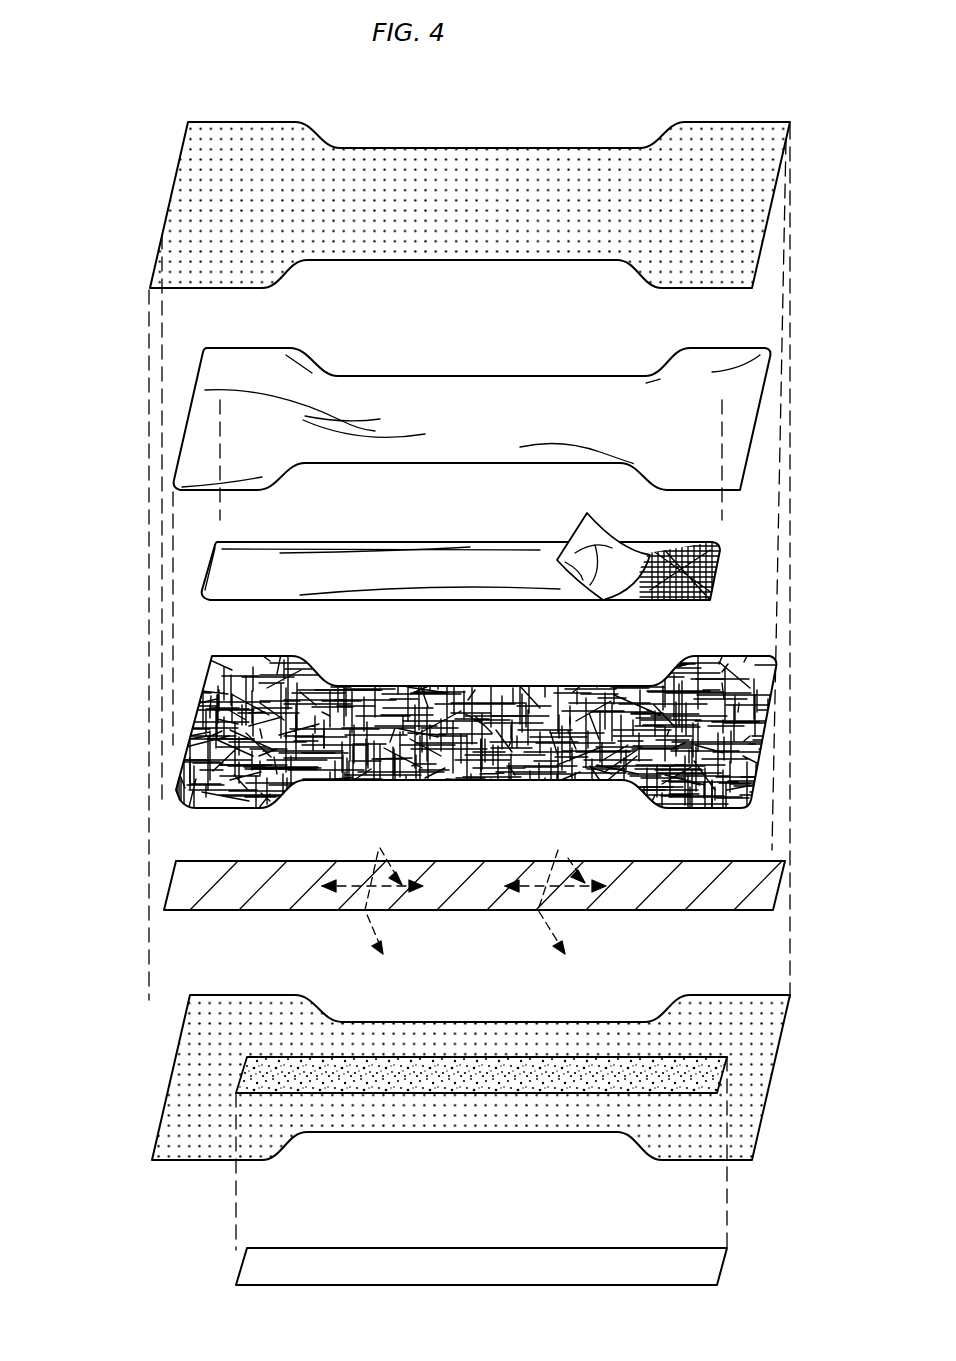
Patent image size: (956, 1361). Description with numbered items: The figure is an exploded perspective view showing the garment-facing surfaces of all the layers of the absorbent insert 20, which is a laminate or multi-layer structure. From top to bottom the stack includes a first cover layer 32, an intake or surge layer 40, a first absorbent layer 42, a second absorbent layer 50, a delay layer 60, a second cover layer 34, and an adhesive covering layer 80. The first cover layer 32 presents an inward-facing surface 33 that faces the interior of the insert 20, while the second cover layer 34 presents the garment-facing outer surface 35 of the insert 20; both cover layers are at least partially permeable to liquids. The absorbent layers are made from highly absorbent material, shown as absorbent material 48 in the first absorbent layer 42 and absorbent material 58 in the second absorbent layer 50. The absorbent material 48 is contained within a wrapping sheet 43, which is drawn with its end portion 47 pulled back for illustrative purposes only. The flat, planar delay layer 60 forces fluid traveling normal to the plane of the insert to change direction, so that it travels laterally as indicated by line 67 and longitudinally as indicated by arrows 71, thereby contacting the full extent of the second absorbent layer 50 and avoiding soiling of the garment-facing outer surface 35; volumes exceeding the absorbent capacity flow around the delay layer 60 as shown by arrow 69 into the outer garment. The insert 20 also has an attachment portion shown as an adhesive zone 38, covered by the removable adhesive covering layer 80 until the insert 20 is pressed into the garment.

The insert 20 is at (92, 133).
The first cover layer 32 is at (480, 145).
The inward-facing surface 33 is at (485, 227).
The second cover layer 34 is at (443, 1022).
The garment-facing outer surface 35 is at (542, 1113).
The adhesive zone 38 is at (400, 1066).
The intake or surge layer 40 is at (447, 372).
The first absorbent layer 42 is at (372, 540).
The wrapping sheet 43 is at (318, 583).
The end portion 47 is at (590, 597).
The absorbent material 48 is at (678, 602).
The second absorbent layer 50 is at (425, 686).
The absorbent material 58 is at (766, 755).
The delay layer 60 is at (247, 861).
The line 67 is at (380, 848).
The arrow 69 is at (363, 912).
The arrows 71 is at (350, 884).
The adhesive covering layer 80 is at (498, 1268).